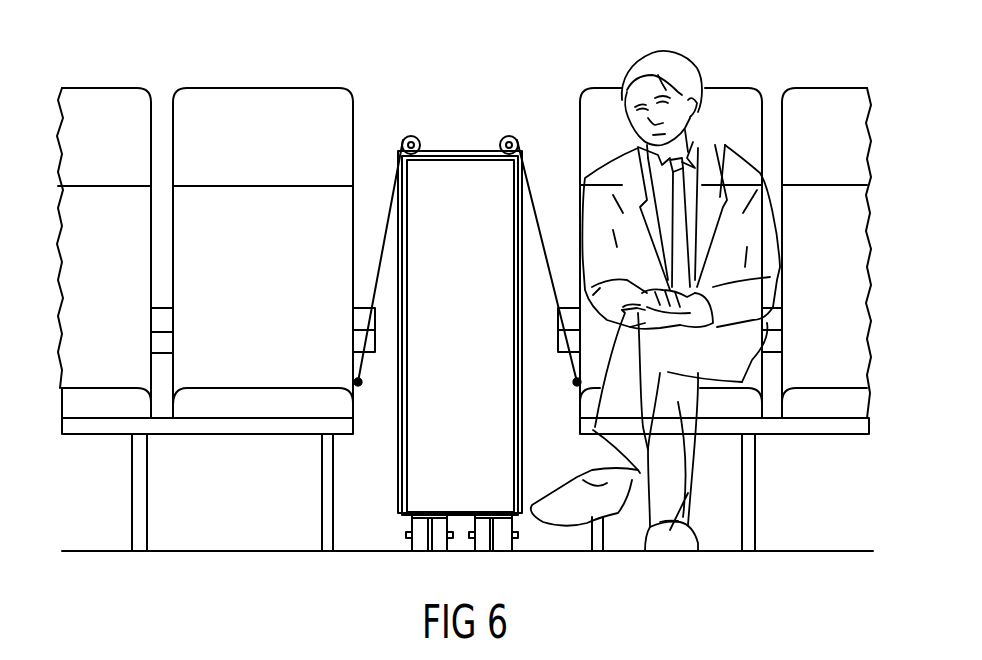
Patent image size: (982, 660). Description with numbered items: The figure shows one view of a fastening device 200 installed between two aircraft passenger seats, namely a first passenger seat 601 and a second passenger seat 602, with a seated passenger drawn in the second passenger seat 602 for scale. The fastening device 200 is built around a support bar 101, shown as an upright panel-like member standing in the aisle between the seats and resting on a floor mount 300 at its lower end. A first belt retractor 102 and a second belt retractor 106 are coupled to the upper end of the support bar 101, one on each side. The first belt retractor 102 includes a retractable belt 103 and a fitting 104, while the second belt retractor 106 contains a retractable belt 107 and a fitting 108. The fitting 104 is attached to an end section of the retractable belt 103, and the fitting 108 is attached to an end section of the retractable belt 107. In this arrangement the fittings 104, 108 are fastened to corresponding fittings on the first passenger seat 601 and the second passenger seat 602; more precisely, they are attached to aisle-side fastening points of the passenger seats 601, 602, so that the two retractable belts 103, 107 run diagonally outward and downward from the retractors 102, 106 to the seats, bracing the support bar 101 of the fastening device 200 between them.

The fastening device 200 is at (490, 70).
The support bar 101 is at (462, 152).
The first belt retractor 102 is at (409, 136).
The second belt retractor 106 is at (511, 136).
The retractable belt 103 is at (380, 257).
The retractable belt 107 is at (540, 222).
The fitting 104 is at (353, 380).
The fitting 108 is at (573, 387).
The floor mount 300 is at (418, 477).
The first passenger seat 601 is at (262, 108).
The second passenger seat 602 is at (600, 107).